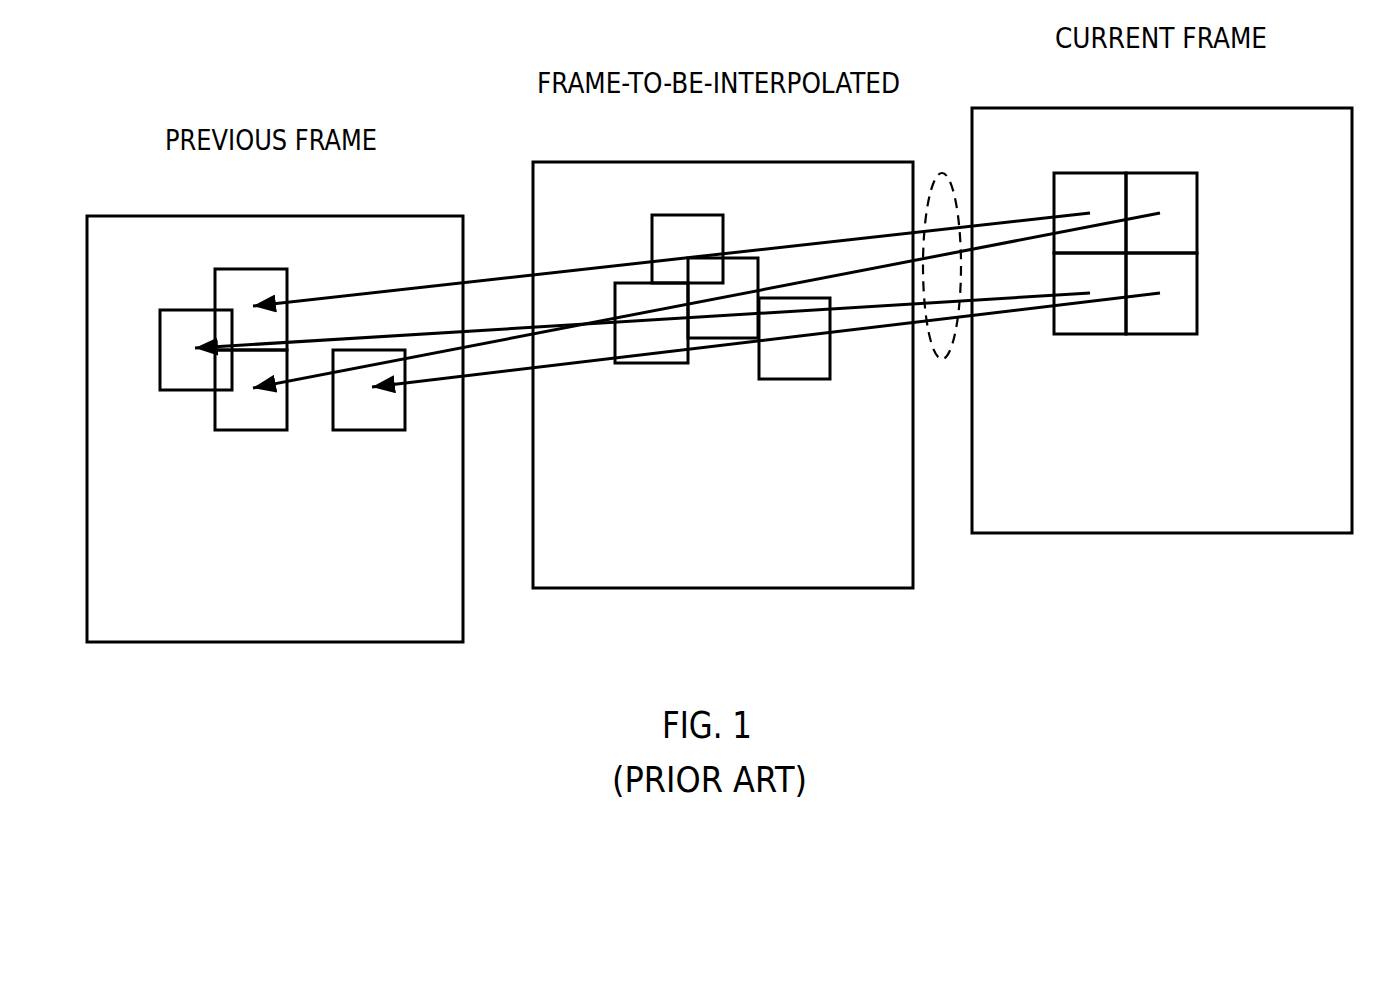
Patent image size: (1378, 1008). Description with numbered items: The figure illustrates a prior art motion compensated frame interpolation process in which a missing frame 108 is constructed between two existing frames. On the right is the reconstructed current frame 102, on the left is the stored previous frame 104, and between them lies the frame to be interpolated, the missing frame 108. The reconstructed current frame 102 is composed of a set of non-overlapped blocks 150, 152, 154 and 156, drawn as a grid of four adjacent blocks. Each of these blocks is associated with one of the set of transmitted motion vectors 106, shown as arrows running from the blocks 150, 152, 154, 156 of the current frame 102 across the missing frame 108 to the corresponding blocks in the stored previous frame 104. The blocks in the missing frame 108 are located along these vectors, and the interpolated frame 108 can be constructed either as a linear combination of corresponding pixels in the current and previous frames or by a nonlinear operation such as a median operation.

The reconstructed current frame 102 is at (1275, 108).
The stored previous frame 104 is at (389, 216).
The set of transmitted motion vectors 106 is at (950, 355).
The missing frame 108 is at (838, 162).
The block 150 is at (253, 268).
The block 152 is at (257, 433).
The block 154 is at (187, 392).
The block 156 is at (377, 433).